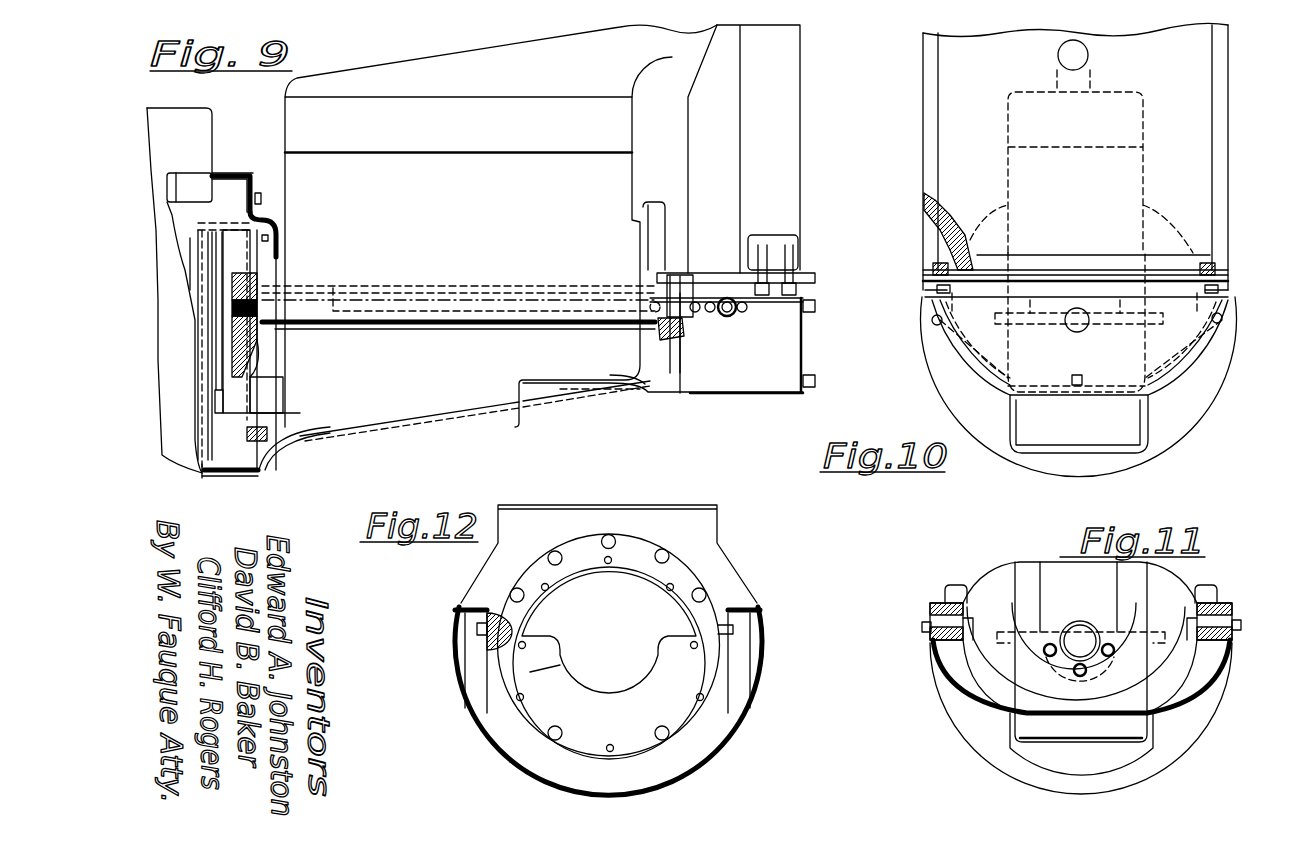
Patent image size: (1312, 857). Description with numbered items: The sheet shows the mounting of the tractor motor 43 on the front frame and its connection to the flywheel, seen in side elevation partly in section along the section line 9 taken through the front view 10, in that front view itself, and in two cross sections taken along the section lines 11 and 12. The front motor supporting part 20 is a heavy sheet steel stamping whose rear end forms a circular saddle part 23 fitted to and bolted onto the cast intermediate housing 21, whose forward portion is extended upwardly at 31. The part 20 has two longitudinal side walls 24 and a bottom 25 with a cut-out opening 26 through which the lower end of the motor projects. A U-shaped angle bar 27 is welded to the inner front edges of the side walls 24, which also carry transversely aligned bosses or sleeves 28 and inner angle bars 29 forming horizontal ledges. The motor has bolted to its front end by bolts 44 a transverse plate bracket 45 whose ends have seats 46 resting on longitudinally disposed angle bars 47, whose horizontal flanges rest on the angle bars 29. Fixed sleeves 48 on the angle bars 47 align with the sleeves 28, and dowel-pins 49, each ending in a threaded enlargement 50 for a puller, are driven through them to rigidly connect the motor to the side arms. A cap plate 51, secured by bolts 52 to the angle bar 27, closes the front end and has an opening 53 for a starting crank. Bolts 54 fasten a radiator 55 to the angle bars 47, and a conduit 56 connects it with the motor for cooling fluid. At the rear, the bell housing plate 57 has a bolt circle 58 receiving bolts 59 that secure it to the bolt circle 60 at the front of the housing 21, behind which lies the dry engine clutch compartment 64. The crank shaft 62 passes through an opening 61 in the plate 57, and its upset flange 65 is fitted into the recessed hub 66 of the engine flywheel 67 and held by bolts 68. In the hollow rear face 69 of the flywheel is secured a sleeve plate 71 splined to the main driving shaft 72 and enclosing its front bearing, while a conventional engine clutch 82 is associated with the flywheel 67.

In FIG. 10, the section line 9— 9 is at (1005, 30).
In FIG. 9, the Figure 10 reference 10 is at (258, 290).
In FIG. 9, the section line 11— 11 is at (727, 395).
In FIG. 9, the section line 12— 12 is at (257, 500).
In FIG. 9, the front motor supporting part 20 is at (272, 470).
In FIG. 10, the front motor supporting part 20 is at (1079, 387).
In FIG. 11, the front motor supporting part 20 is at (1000, 700).
In FIG. 12, the front motor supporting part 20 is at (470, 705).
In FIG. 9, the intermediate housing 21 is at (197, 340).
In FIG. 9, the saddle part 23 is at (236, 478).
In FIG. 10, the saddle part 23 is at (1208, 400).
In FIG. 11, the saddle part 23 is at (1205, 715).
In FIG. 12, the saddle part 23 is at (745, 708).
In FIG. 9, the longitudinal side walls 24 is at (558, 392).
In FIG. 10, the longitudinal side walls 24 is at (975, 390).
In FIG. 11, the longitudinal side walls 24 is at (963, 660).
In FIG. 12, the longitudinal side walls 24 is at (464, 632).
In FIG. 9, the bottom 25 is at (660, 393).
In FIG. 10, the bottom 25 is at (1160, 410).
In FIG. 11, the bottom 25 is at (1125, 765).
In FIG. 9, the cut-out opening 26 is at (288, 450).
In FIG. 10, the cut-out opening 26 is at (1125, 430).
In FIG. 11, the cut-out opening 26 is at (1120, 735).
In FIG. 9, the U-shaped angle bar 27 is at (790, 362).
In FIG. 10, the U-shaped angle bar 27 is at (1175, 345).
In FIG. 11, the U-shaped angle bar 27 is at (1081, 652).
In FIG. 11, the bosses or sleeves 28 is at (968, 650).
In FIG. 9, the angle bar 29 is at (433, 312).
In FIG. 10, the angle bar 29 is at (925, 290).
In FIG. 11, the angle bar 29 is at (930, 613).
In FIG. 9, the upward extension 31 is at (152, 120).
In FIG. 9, the motor 43 is at (501, 226).
In FIG. 10, the motor 43 is at (1143, 112).
In FIG. 11, the motor 43 is at (1080, 602).
In FIG. 9, the bolts 44 is at (660, 330).
In FIG. 11, the bolts 44 is at (1043, 655).
In FIG. 9, the transverse plate bracket 45 is at (690, 396).
In FIG. 11, the transverse plate bracket 45 is at (1170, 690).
In FIG. 9, the seats 46 is at (668, 280).
In FIG. 11, the seats 46 is at (950, 590).
In FIG. 9, the longitudinally disposed angle bars 47 is at (736, 278).
In FIG. 10, the longitudinally disposed angle bars 47 is at (930, 277).
In FIG. 11, the longitudinally disposed angle bars 47 is at (935, 603).
In FIG. 12, the longitudinally disposed angle bars 47 is at (458, 606).
In FIG. 9, the fixed sleeves 48 is at (727, 314).
In FIG. 11, the fixed sleeves 48 is at (990, 665).
In FIG. 9, the dowel-pins 49 is at (707, 312).
In FIG. 11, the dowel-pins 49 is at (940, 640).
In FIG. 10, the threaded enlargement 50 is at (930, 300).
In FIG. 11, the threaded enlargement 50 is at (922, 628).
In FIG. 9, the cap plate 51 is at (790, 300).
In FIG. 10, the cap plate 51 is at (1228, 340).
In FIG. 9, the bolts 52 is at (810, 303).
In FIG. 10, the bolts 52 is at (1082, 375).
In FIG. 9, the opening 53 is at (795, 305).
In FIG. 10, the opening 53 is at (1075, 330).
In FIG. 9, the bolts 54 is at (762, 262).
In FIG. 10, the bolts 54 is at (932, 268).
In FIG. 9, the radiator 55 is at (758, 149).
In FIG. 10, the radiator 55 is at (925, 205).
In FIG. 9, the conduit 56 is at (695, 40).
In FIG. 10, the conduit 56 is at (1090, 57).
In FIG. 9, the bell housing plate 57 is at (278, 222).
In FIG. 12, the bell housing plate 57 is at (530, 672).
In FIG. 9, the bolt circle 58 is at (255, 181).
In FIG. 12, the bolt circle 58 is at (710, 667).
In FIG. 9, the bolts 59 is at (263, 204).
In FIG. 12, the bolts 59 is at (548, 558).
In FIG. 9, the bolt circle 60 is at (215, 475).
In FIG. 9, the opening 61 is at (270, 362).
In FIG. 12, the opening 61 is at (565, 653).
In FIG. 9, the crank shaft 62 is at (300, 338).
In FIG. 9, the engine clutch compartment 64 is at (182, 215).
In FIG. 9, the upset flange 65 is at (305, 290).
In FIG. 9, the recessed hub 66 is at (284, 390).
In FIG. 9, the engine flywheel 67 is at (273, 252).
In FIG. 9, the bolts 68 is at (270, 345).
In FIG. 9, the hollow rear face portion 69 is at (237, 355).
In FIG. 9, the sleeve plate 71 is at (233, 308).
In FIG. 9, the main driving shaft 72 is at (268, 325).
In FIG. 9, the engine clutch 82 is at (268, 427).